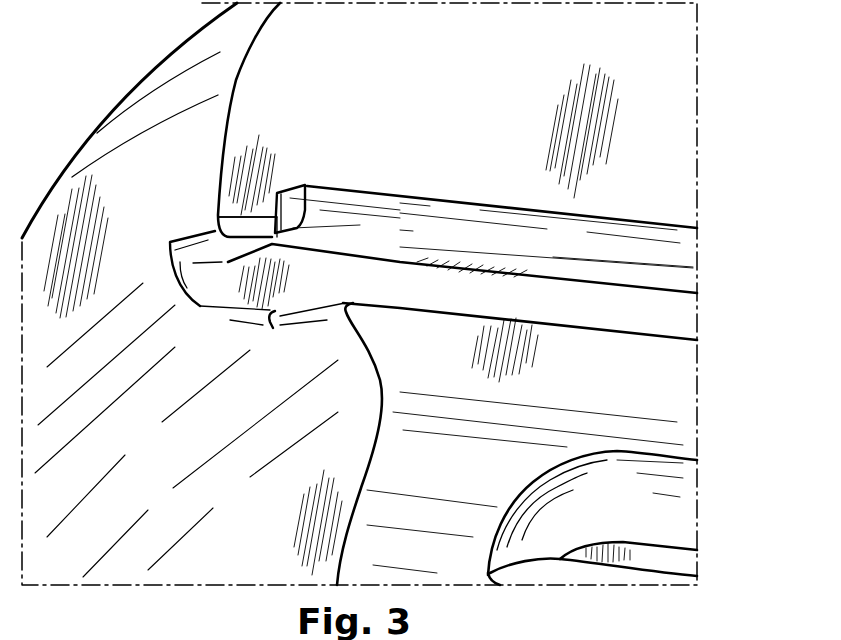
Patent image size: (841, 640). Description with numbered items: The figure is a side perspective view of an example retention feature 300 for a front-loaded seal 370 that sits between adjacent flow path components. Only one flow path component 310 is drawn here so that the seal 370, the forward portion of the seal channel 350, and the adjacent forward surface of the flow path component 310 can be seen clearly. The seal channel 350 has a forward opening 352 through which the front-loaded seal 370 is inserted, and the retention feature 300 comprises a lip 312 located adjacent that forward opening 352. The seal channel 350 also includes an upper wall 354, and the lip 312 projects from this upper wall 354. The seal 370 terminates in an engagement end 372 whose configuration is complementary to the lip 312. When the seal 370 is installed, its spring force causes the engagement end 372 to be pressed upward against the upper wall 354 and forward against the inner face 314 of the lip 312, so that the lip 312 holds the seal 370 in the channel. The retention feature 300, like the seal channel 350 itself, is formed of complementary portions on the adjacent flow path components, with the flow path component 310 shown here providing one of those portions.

The retention feature 300 is at (96, 86).
The flow path component 310 is at (100, 172).
The lip 312 is at (230, 200).
The inner face 314 is at (277, 215).
The seal channel 350 is at (508, 250).
The forward opening 352 is at (200, 282).
The upper wall 354 is at (278, 193).
The seal 370 is at (487, 227).
The engagement end 372 is at (295, 198).